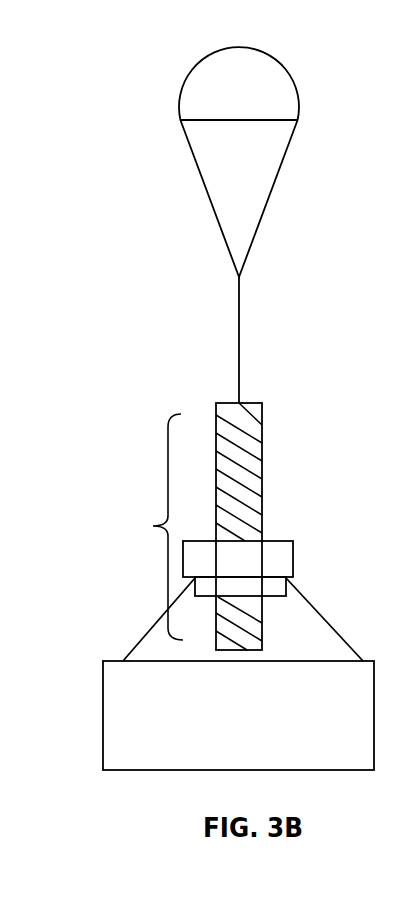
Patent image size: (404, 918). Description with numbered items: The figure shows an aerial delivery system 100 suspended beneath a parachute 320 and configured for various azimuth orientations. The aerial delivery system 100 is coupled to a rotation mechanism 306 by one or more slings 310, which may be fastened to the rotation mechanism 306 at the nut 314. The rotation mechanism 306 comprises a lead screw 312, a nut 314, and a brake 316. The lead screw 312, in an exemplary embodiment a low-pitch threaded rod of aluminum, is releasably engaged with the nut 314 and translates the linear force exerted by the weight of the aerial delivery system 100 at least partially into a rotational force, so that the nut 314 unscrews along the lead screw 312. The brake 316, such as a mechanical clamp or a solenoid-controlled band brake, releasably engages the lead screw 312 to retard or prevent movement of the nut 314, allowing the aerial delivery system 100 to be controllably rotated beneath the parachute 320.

The parachute 320 is at (287, 71).
The lead screw 312 is at (262, 445).
The nut 314 is at (295, 541).
The brake 316 is at (286, 585).
The slings 310 is at (140, 640).
The aerial delivery system 100 is at (103, 697).
The rotation mechanism 306 is at (148, 527).